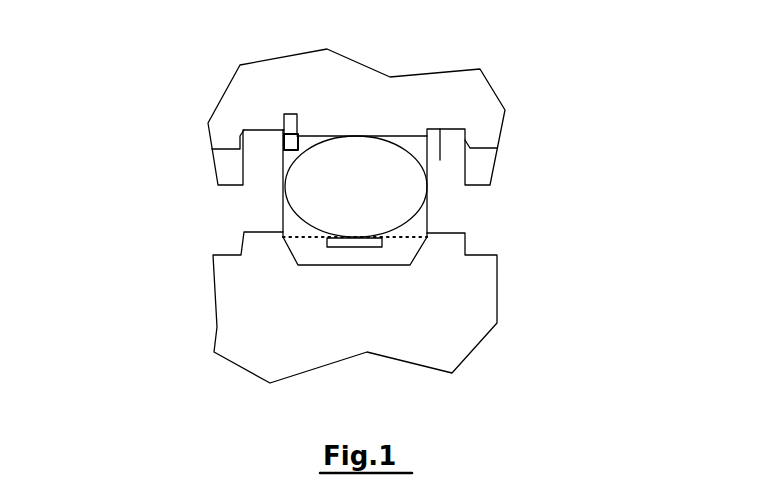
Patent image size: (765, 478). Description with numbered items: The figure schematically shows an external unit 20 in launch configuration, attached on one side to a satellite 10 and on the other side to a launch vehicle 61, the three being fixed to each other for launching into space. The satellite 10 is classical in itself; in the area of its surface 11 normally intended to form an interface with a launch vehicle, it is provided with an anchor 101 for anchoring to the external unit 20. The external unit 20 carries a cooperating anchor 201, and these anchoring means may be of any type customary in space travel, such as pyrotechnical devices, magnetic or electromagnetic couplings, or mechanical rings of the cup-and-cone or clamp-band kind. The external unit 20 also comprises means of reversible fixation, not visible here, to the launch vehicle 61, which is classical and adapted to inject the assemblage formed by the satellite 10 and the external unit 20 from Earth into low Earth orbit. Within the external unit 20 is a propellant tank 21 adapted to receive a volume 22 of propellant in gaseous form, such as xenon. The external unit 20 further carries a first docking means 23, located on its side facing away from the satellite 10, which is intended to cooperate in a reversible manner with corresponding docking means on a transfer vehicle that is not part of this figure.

The satellite 10 is at (492, 83).
The surface 11 is at (440, 160).
The anchor 101 is at (284, 118).
The anchor 201 is at (284, 143).
The external unit 20 is at (283, 222).
The propellant tank 21 is at (372, 212).
The volume of propellant 22 is at (375, 198).
The first docking means 23 is at (367, 247).
The launch vehicle 61 is at (215, 327).